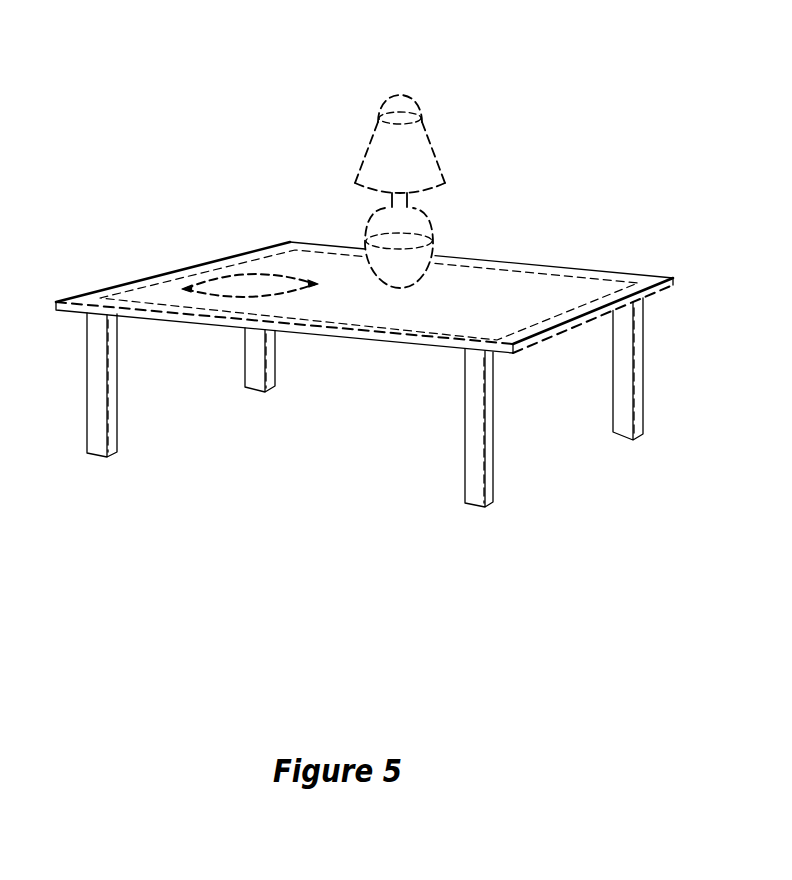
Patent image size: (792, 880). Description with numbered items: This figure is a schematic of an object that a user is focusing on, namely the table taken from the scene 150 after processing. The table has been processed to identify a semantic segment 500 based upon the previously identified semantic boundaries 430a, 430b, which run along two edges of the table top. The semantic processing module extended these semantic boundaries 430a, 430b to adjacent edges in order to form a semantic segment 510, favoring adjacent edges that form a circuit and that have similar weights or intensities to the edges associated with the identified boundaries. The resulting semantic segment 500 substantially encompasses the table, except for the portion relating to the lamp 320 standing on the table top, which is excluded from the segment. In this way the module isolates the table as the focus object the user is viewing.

The scene 150 is at (399, 272).
The lamp 320 is at (370, 99).
The semantic segment 510 is at (460, 257).
The semantic segment 500 is at (528, 290).
The semantic boundary 430a is at (160, 274).
The semantic boundary 430b is at (652, 296).